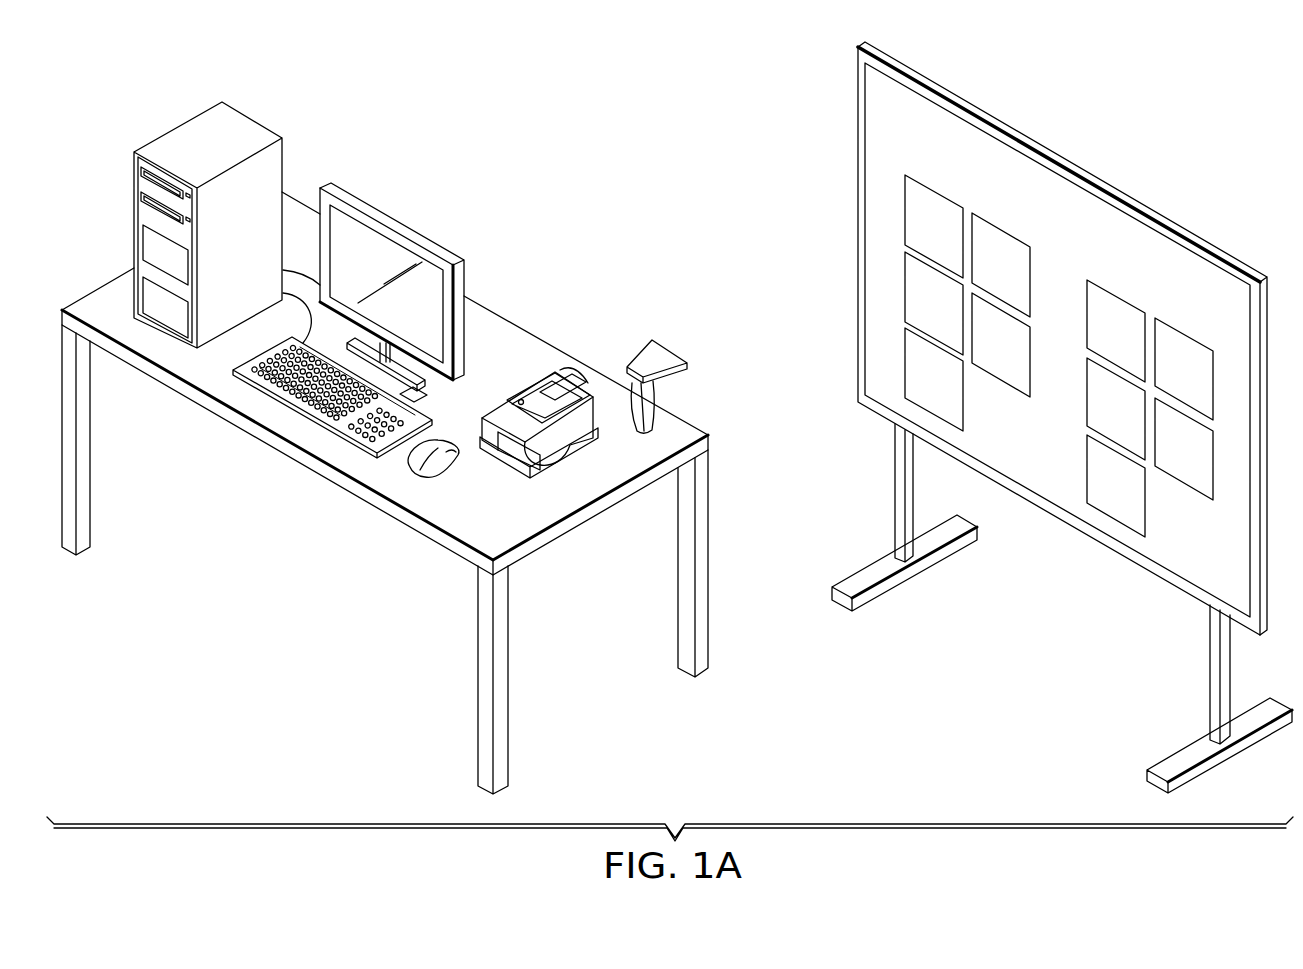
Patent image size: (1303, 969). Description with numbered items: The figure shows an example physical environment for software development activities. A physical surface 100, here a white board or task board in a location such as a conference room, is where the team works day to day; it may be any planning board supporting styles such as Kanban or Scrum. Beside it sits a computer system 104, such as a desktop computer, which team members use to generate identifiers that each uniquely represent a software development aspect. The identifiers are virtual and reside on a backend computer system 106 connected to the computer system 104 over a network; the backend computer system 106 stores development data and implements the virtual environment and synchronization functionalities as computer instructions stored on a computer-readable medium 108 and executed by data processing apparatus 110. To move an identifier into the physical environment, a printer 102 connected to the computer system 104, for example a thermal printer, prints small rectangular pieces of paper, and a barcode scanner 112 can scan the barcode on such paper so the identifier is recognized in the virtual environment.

The physical surface 100 is at (1062, 160).
The printer 102 is at (568, 370).
The computer system 104 is at (392, 222).
The backend computer system 106 is at (239, 124).
The computer-readable medium 108 is at (157, 243).
The data processing apparatus 110 is at (157, 300).
The barcode scanner 112 is at (660, 360).